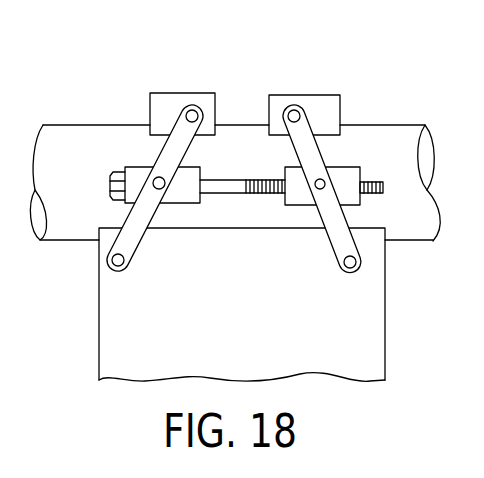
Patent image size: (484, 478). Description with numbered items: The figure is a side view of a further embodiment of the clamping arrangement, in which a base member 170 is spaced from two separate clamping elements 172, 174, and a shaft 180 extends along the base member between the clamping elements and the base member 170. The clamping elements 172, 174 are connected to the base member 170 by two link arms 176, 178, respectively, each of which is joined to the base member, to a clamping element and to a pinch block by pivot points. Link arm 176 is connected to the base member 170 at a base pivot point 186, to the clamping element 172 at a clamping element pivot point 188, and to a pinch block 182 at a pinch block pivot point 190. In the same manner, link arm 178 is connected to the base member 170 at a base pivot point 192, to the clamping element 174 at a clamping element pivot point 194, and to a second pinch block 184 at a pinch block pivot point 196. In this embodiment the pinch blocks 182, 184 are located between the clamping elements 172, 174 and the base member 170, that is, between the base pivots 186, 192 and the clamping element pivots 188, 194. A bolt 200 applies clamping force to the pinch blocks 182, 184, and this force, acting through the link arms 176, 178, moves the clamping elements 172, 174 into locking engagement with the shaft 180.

The base member 170 is at (263, 357).
The clamping element 172 is at (332, 115).
The clamping element 174 is at (163, 104).
The link arm 176 is at (343, 226).
The link arm 178 is at (165, 150).
The shaft 180 is at (262, 167).
The pinch block 182 is at (347, 188).
The pinch block 184 is at (135, 177).
The base pivot point 186 is at (345, 267).
The clamping element pivot point 188 is at (299, 110).
The pinch block pivot point 190 is at (325, 178).
The base pivot point 192 is at (122, 268).
The clamping element pivot point 194 is at (198, 112).
The pinch block pivot point 196 is at (163, 189).
The bolt 200 is at (110, 184).